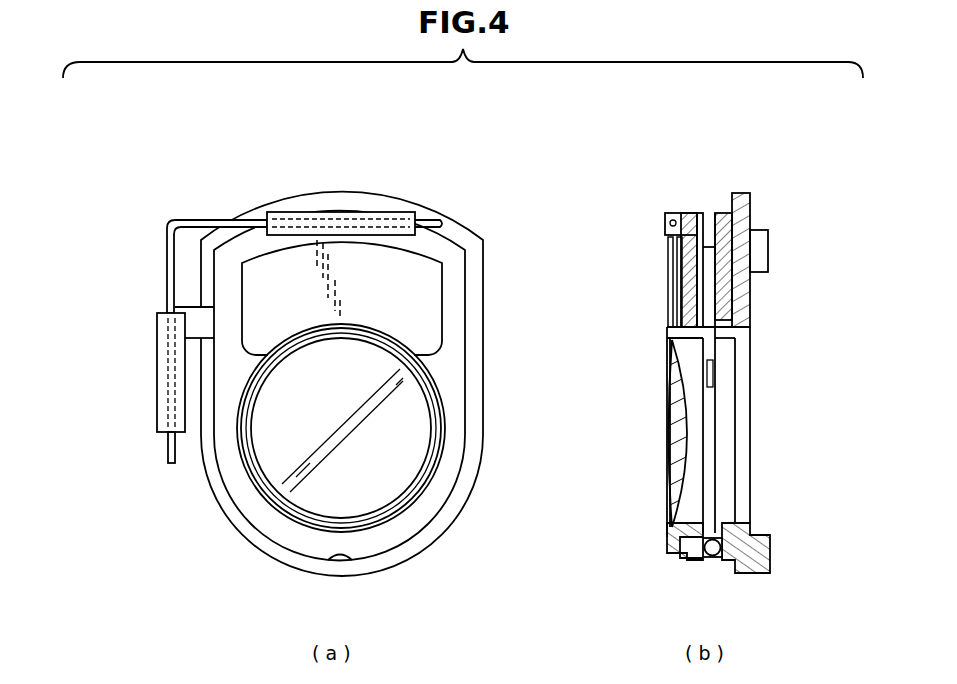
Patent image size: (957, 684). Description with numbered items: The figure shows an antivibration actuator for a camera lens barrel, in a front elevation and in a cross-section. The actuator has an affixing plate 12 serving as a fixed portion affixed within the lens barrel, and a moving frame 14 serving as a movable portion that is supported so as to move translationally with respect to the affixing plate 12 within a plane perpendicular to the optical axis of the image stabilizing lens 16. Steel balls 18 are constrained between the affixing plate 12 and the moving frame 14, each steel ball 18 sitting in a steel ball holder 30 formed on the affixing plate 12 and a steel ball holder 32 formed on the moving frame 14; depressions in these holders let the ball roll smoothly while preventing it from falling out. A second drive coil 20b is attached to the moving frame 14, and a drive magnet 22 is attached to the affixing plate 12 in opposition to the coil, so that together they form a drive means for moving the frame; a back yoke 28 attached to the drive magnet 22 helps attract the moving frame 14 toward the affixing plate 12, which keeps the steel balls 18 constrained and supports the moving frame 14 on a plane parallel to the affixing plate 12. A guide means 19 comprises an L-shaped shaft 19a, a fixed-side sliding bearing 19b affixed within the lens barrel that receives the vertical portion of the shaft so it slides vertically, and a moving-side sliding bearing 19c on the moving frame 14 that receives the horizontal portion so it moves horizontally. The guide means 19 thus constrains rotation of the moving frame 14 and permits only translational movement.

The affixing plate 12 is at (742, 217).
The moving frame 14 is at (688, 213).
The image stabilizing lens 16 is at (675, 452).
The steel ball 18 is at (714, 540).
The guide means 19 is at (377, 286).
The L-shaped shaft 19a is at (173, 285).
The fixed-side sliding bearing 19b is at (158, 398).
The moving-side sliding bearing 19c is at (332, 212).
The second drive coil 20b is at (708, 250).
The drive magnet 22 is at (722, 213).
The back yoke 28 is at (728, 213).
The steel ball holder 30 is at (700, 560).
The steel ball holder 32 is at (718, 560).